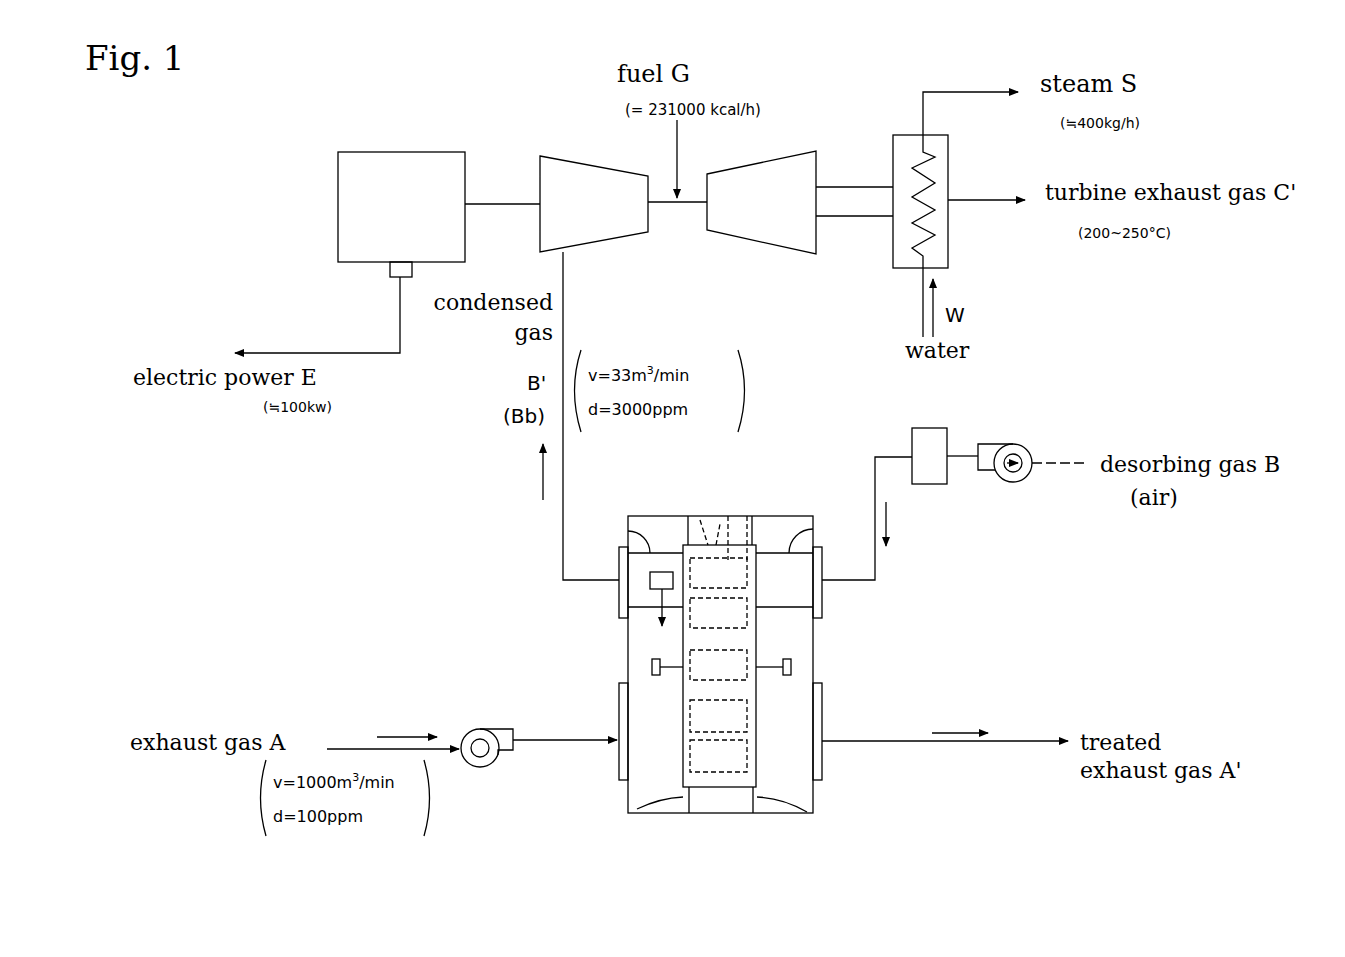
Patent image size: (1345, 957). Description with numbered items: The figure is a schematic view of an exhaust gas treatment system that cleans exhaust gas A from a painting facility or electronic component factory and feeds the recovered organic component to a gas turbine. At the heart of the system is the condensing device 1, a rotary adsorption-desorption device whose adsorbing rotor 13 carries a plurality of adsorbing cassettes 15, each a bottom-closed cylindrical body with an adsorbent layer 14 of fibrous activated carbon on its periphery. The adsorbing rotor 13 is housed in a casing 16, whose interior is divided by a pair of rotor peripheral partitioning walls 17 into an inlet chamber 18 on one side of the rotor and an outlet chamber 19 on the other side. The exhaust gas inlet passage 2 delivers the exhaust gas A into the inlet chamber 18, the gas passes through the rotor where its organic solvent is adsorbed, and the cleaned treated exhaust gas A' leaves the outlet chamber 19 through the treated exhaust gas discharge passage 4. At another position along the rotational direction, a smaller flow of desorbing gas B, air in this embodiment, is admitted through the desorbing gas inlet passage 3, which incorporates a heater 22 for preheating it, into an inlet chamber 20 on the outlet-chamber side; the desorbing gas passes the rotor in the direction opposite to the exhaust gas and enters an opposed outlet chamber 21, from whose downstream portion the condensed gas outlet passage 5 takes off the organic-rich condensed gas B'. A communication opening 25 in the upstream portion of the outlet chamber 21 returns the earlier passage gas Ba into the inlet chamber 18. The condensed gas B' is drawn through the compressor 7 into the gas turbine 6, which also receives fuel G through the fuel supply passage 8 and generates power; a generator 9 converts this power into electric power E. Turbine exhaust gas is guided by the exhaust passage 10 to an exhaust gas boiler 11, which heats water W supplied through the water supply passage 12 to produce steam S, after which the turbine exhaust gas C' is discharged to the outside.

The condensing device 1 is at (823, 627).
The exhaust gas inlet passage 2 is at (542, 745).
The desorbing gas inlet passage 3 is at (848, 585).
The treated exhaust gas discharge passage 4 is at (977, 745).
The condensed gas outlet passage 5 is at (560, 533).
The gas turbine 6 is at (760, 246).
The compressor 7 is at (606, 246).
The fuel supply passage 8 is at (672, 161).
The generator 9 is at (403, 152).
The exhaust passage 10 is at (852, 218).
The exhaust gas boiler 11 is at (950, 240).
The water supply passage 12 is at (918, 307).
The adsorbing rotor 13 is at (697, 515).
The adsorbent layer 14 is at (770, 462).
The adsorbing cassette 15 is at (730, 510).
The casing 16 is at (803, 496).
The rotor peripheral partitioning walls 17 is at (628, 813).
The inlet chamber 18 is at (652, 733).
The outlet chamber 19 is at (782, 722).
The inlet chamber for desorbing gas 20 is at (812, 532).
The outlet chamber for desorbing gas 21 is at (618, 513).
The heater 22 is at (930, 487).
The communication opening 25 is at (648, 587).
The earlier passage gas Ba is at (654, 613).